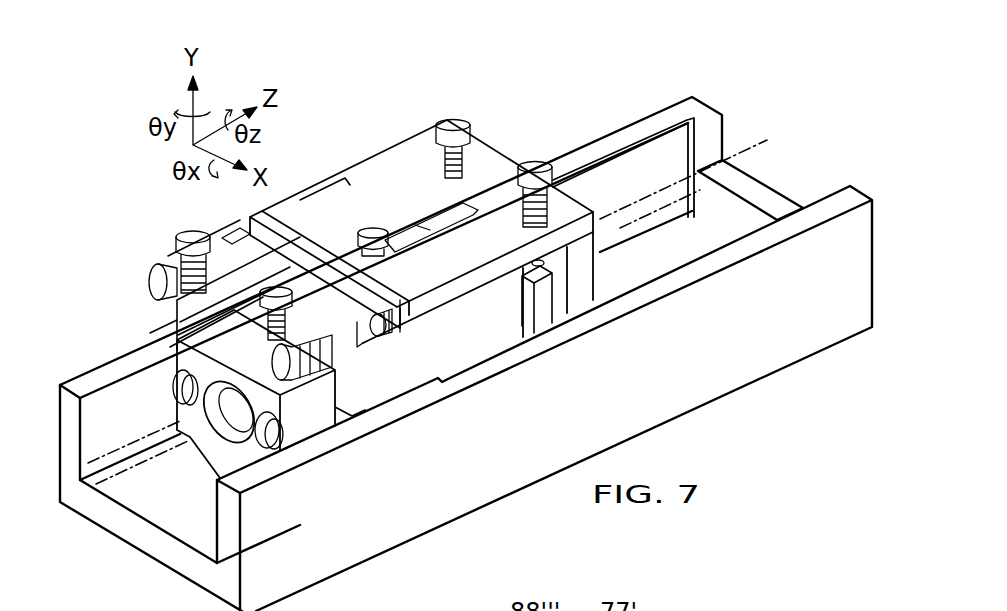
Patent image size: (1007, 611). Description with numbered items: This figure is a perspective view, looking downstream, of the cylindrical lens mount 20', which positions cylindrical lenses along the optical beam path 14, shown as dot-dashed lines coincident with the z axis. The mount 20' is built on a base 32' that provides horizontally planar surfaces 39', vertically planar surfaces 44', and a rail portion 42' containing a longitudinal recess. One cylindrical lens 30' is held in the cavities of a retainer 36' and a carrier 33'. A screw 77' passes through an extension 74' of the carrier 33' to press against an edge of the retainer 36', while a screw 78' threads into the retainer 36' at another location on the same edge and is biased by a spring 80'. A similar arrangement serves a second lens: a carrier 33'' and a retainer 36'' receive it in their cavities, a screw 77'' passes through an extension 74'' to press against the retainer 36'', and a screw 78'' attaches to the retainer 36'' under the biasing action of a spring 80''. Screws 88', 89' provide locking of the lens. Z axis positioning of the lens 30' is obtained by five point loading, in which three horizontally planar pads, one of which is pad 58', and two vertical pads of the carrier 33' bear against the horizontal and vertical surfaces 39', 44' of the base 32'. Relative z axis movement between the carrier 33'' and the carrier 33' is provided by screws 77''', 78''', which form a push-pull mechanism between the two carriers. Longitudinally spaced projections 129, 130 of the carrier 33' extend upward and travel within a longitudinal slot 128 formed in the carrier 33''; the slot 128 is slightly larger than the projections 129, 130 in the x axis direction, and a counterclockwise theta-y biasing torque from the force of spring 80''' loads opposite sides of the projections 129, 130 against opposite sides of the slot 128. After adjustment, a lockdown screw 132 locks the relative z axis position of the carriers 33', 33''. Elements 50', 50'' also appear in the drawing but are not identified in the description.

The lens mount 20' is at (540, 38).
The optical beam path 14 is at (153, 453).
The cylindrical lens 30' is at (221, 426).
The base 32' is at (466, 354).
The carrier 33' is at (443, 438).
The carrier 33'' is at (421, 231).
The retainer 36' is at (271, 408).
The retainer 36'' is at (577, 313).
The horizontally planar surfaces 39' is at (733, 203).
The rail portion 42' is at (72, 361).
The vertically planar surfaces 44' is at (623, 145).
The carriage 50' is at (348, 438).
The upper carriage 50'' is at (593, 274).
The horizontally planar pad 58' is at (463, 410).
The extension 74' is at (194, 285).
The extension 74'' is at (527, 158).
The screw 77' is at (389, 337).
The screw 77'' is at (437, 129).
The screw 77''' is at (131, 282).
The screw 78' is at (169, 247).
The screw 78'' is at (508, 195).
The screw 78''' is at (323, 382).
The spring 80' is at (226, 222).
The spring 80'' is at (493, 239).
The spring 80''' is at (367, 386).
The locking screw 88' is at (268, 465).
The locking screw 89' is at (149, 394).
The longitudinal slot 128 is at (405, 240).
The projection 129 is at (392, 213).
The projection 130 is at (356, 253).
The lockdown screw 132 is at (360, 235).